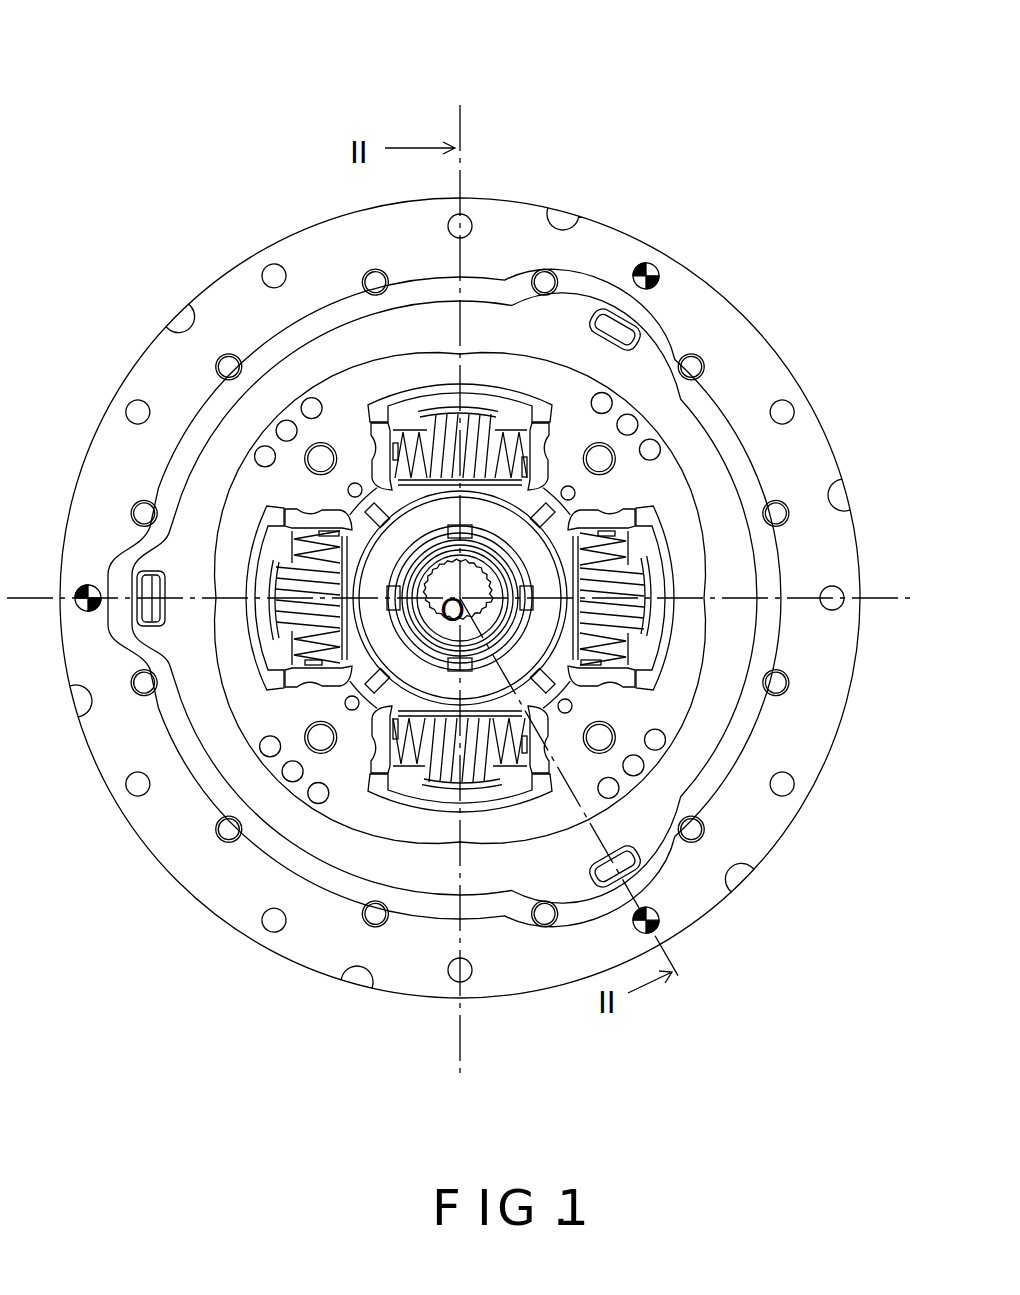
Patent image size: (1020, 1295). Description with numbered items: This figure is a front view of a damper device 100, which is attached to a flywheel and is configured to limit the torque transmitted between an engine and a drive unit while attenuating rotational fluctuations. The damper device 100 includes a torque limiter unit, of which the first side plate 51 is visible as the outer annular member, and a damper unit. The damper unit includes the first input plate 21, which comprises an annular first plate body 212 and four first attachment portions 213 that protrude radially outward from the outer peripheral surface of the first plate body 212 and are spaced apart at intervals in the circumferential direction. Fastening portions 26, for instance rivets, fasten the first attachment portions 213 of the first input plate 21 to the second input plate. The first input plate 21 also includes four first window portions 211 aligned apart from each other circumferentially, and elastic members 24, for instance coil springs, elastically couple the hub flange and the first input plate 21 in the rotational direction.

The damper device 100 is at (811, 142).
The first side plate 51 is at (597, 240).
The fastening portion 26 is at (607, 404).
The first attachment portion 213 is at (677, 470).
The first input plate 21 is at (714, 492).
The first plate body 212 is at (687, 555).
The first window portion 211 is at (622, 650).
The elastic member 24 is at (627, 657).